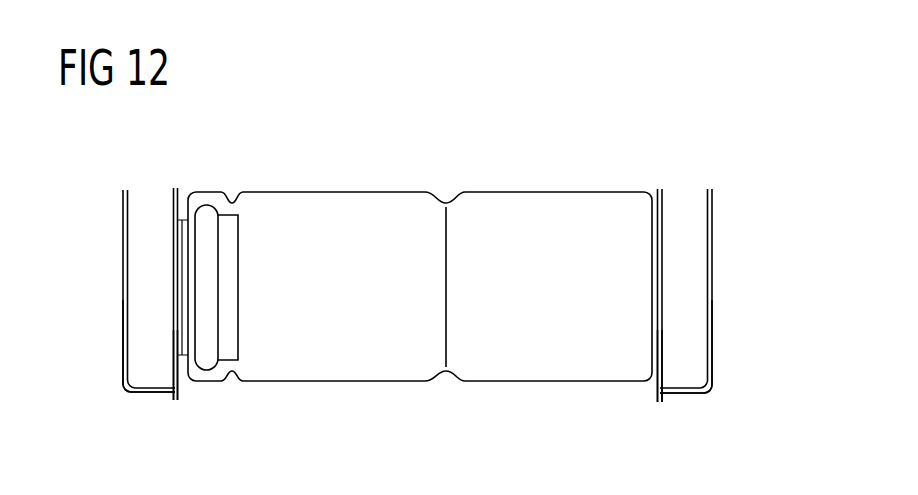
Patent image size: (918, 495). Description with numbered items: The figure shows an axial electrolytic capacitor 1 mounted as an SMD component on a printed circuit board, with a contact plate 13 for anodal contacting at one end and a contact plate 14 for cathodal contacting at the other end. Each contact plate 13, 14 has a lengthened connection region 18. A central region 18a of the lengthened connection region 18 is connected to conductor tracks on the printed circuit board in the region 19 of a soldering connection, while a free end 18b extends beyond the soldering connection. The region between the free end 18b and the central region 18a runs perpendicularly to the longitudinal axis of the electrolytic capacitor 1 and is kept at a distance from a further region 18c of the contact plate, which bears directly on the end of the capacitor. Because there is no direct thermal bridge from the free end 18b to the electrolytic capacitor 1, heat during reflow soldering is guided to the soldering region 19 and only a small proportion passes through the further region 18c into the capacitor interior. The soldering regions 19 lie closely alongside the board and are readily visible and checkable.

The electrolytic capacitor 1 is at (532, 163).
The contact plate 13 is at (122, 360).
The contact plate 14 is at (714, 372).
The lengthened connection region 18 is at (422, 305).
The central region 18a is at (417, 386).
The free end 18b is at (417, 287).
The further region 18c is at (418, 295).
The region of a soldering connection 19 is at (178, 397).